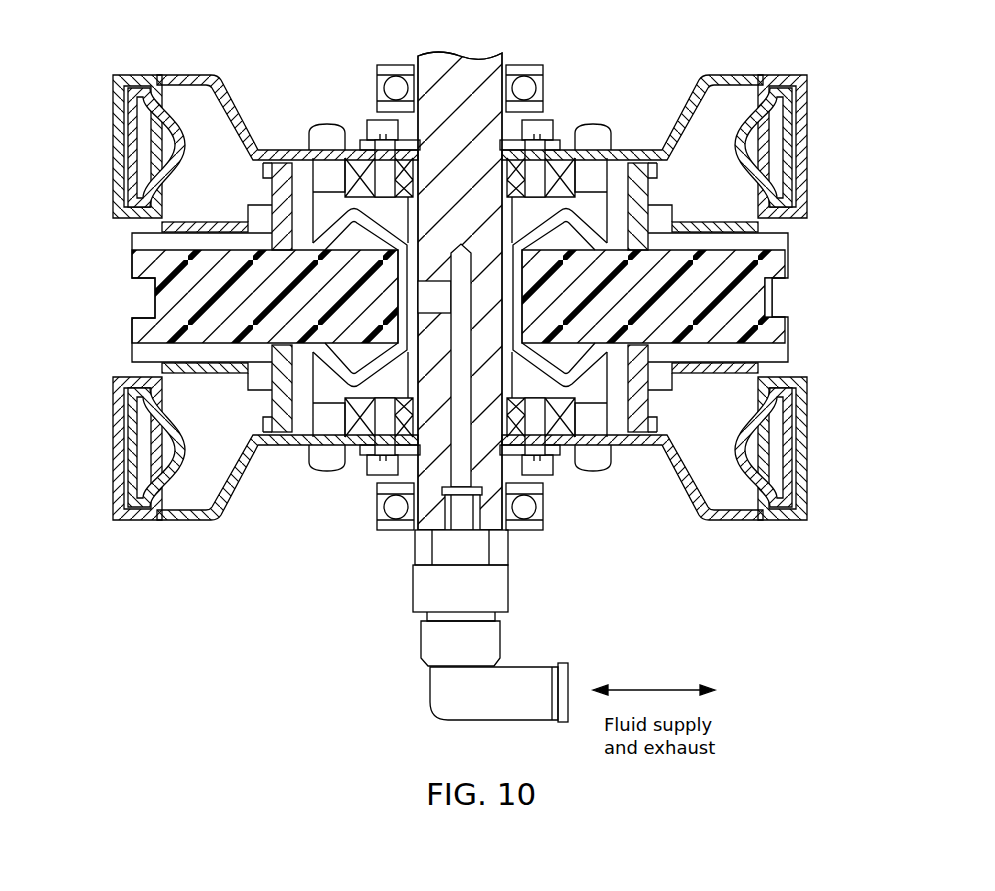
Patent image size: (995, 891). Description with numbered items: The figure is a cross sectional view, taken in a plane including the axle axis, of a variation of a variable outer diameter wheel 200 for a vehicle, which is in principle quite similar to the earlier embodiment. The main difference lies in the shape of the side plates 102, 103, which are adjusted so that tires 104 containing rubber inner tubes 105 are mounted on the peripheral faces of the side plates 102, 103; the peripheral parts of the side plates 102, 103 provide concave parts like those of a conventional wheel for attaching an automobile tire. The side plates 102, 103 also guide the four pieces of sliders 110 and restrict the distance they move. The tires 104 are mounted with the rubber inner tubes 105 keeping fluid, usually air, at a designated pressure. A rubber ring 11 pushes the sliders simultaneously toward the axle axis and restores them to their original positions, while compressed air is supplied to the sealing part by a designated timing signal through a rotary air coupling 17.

The variable outer diameter wheel 200 is at (308, 67).
The side plate 102 is at (720, 74).
The side plate 103 is at (688, 496).
The tire 104 is at (114, 126).
The rubber inner tube 105 is at (132, 182).
The rubber ring 11 is at (777, 290).
The slider 110 is at (760, 332).
The rotary air coupling 17 is at (503, 672).